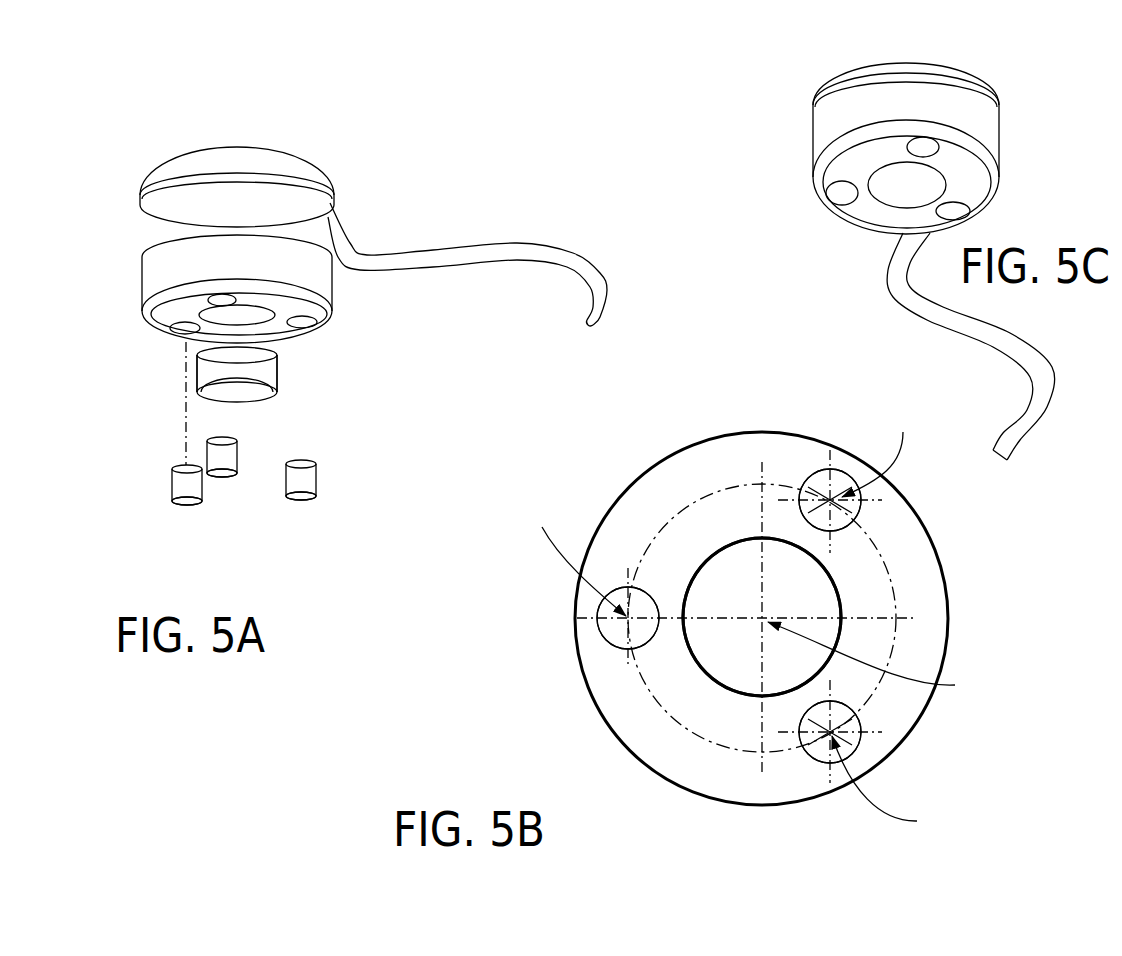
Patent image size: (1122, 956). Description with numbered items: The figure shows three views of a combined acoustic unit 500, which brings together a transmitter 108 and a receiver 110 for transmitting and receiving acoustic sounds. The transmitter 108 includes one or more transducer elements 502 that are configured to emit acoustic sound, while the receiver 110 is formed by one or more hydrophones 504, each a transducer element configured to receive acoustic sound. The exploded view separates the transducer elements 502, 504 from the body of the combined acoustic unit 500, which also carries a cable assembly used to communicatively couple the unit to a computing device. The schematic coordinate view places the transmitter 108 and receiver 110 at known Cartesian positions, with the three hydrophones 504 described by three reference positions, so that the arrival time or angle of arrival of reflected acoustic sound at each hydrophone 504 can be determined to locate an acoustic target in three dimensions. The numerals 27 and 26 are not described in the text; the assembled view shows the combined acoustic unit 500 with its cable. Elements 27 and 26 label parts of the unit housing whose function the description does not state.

In FIG. 5A, the combined acoustic unit 500 is at (215, 136).
In FIG. 5B, the combined acoustic unit 500 is at (691, 411).
In FIG. 5C, the combined acoustic unit 500 is at (765, 110).
In FIG. 5A, the cap 27 is at (334, 187).
In FIG. 5A, the housing body 26 is at (339, 309).
In FIG. 5B, the housing body 26 is at (741, 427).
In FIG. 5A, the transducer element 502 is at (279, 371).
In FIG. 5B, the transducer element 502 is at (710, 678).
In FIG. 5A, the transmitter 108 is at (269, 402).
In FIG. 5B, the transmitter 108 is at (707, 554).
In FIG. 5A, the hydrophone 504 is at (172, 483).
In FIG. 5B, the hydrophone 504 is at (598, 613).
In FIG. 5A, the receiver 110 is at (187, 507).
In FIG. 5B, the receiver 110 is at (618, 647).